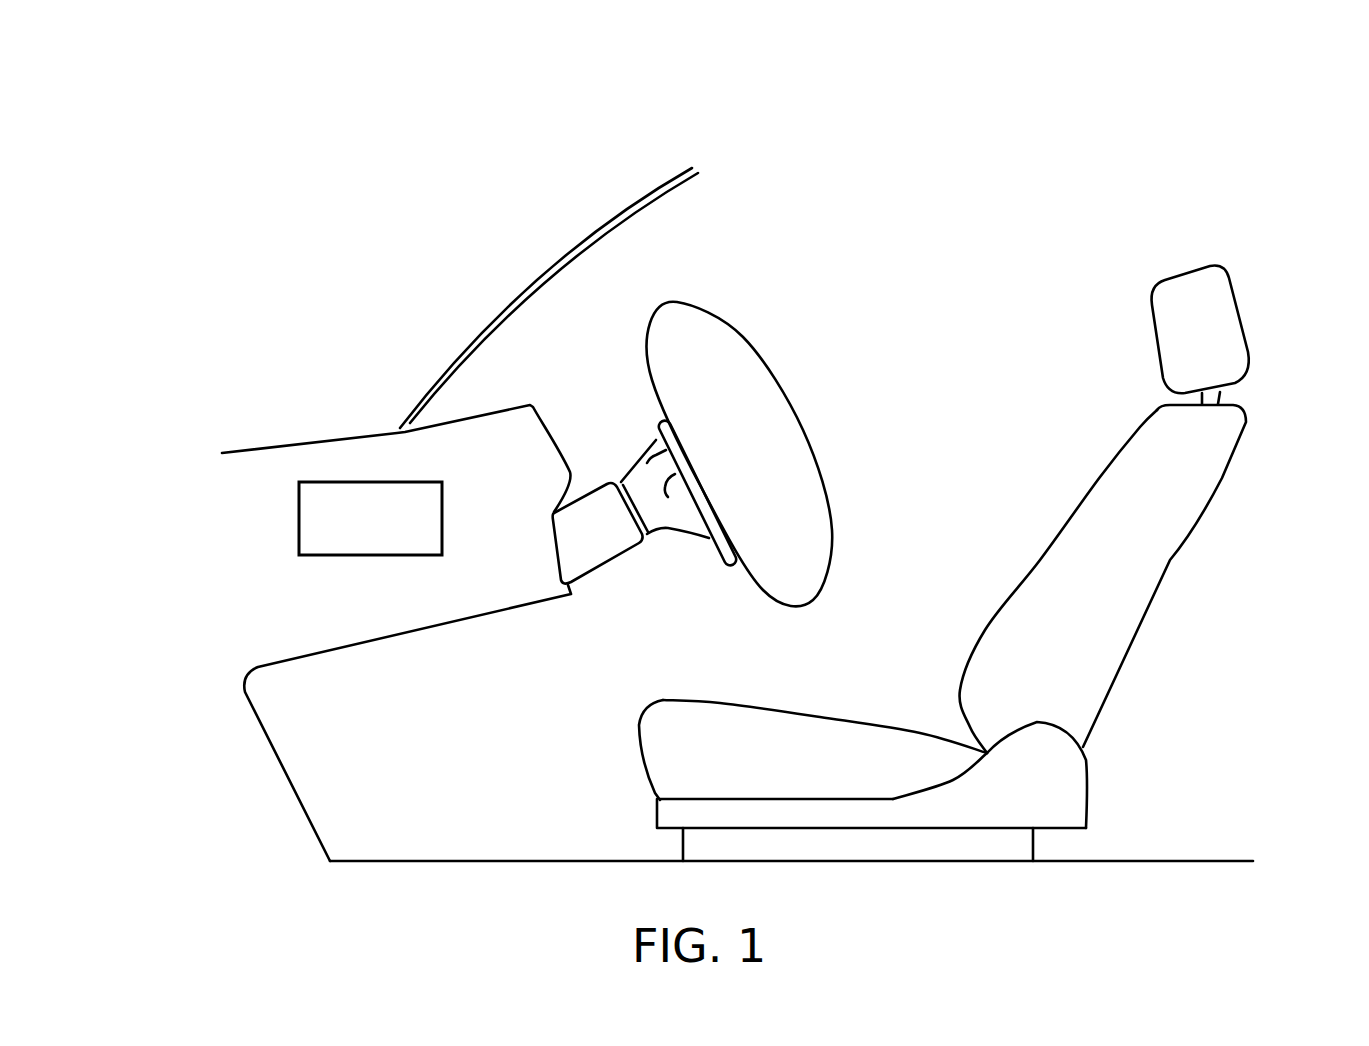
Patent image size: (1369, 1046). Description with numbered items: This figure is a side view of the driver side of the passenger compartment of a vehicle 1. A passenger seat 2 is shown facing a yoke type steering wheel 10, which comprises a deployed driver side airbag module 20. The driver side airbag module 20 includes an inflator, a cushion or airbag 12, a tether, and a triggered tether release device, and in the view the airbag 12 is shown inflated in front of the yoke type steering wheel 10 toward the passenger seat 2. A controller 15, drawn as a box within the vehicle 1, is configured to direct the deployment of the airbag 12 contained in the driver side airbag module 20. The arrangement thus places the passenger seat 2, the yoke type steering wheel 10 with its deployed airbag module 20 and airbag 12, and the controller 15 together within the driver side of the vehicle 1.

The vehicle 1 is at (253, 136).
The passenger seat 2 is at (1173, 483).
The yoke type steering wheel 10 is at (635, 358).
The airbag 12 is at (715, 308).
The controller 15 is at (370, 518).
The driver side airbag module 20 is at (852, 363).